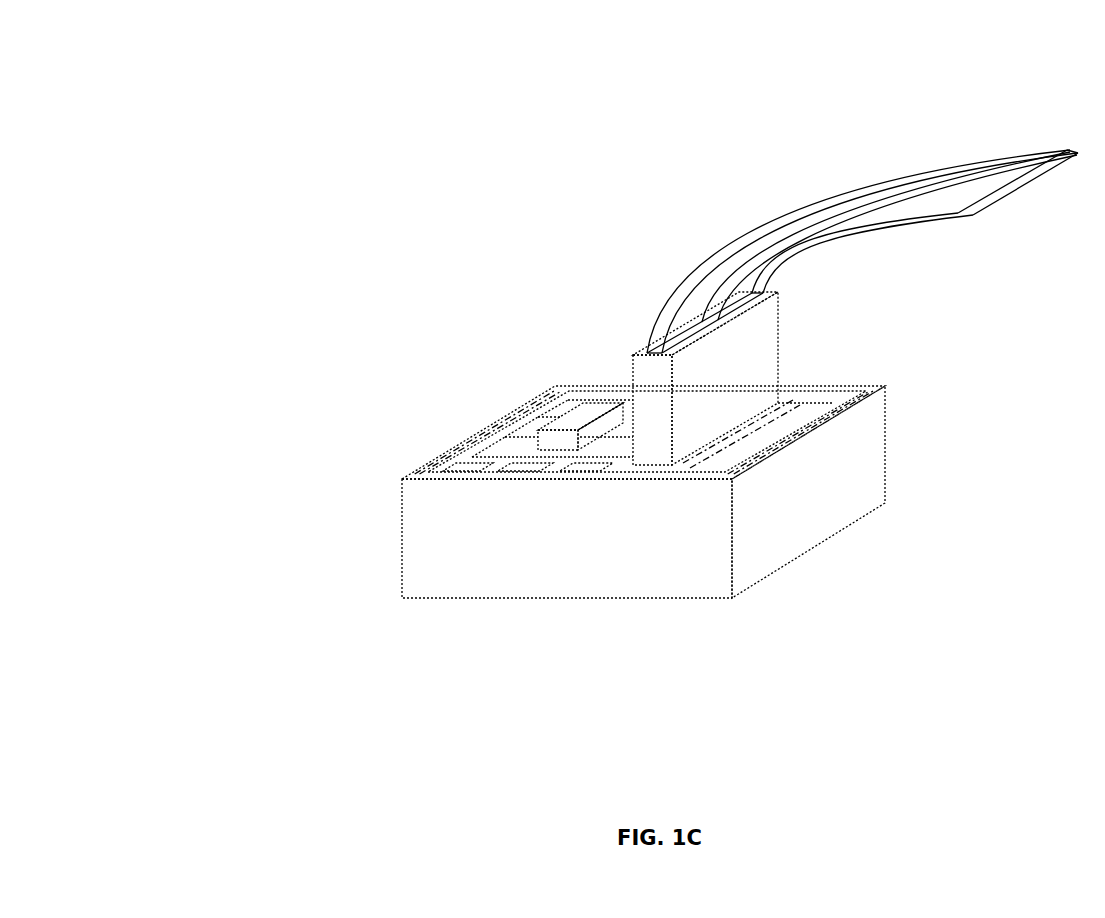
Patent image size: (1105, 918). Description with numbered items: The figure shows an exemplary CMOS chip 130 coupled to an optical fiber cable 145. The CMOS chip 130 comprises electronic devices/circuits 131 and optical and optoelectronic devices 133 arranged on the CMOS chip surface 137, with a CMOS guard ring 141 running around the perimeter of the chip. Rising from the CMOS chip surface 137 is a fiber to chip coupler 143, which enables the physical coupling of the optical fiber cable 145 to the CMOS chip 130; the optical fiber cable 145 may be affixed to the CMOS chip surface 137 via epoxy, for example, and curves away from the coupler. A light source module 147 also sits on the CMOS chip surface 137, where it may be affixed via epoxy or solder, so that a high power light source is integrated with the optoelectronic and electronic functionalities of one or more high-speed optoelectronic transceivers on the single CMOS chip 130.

The CMOS chip 130 is at (270, 97).
The electronic devices/circuits 131 is at (809, 406).
The optical and optoelectronic devices 133 is at (501, 438).
The CMOS chip surface 137 is at (455, 265).
The CMOS guard ring 141 is at (872, 447).
The fiber to chip coupler 143 is at (778, 317).
The optical fiber cable 145 is at (810, 198).
The light source module 147 is at (577, 392).